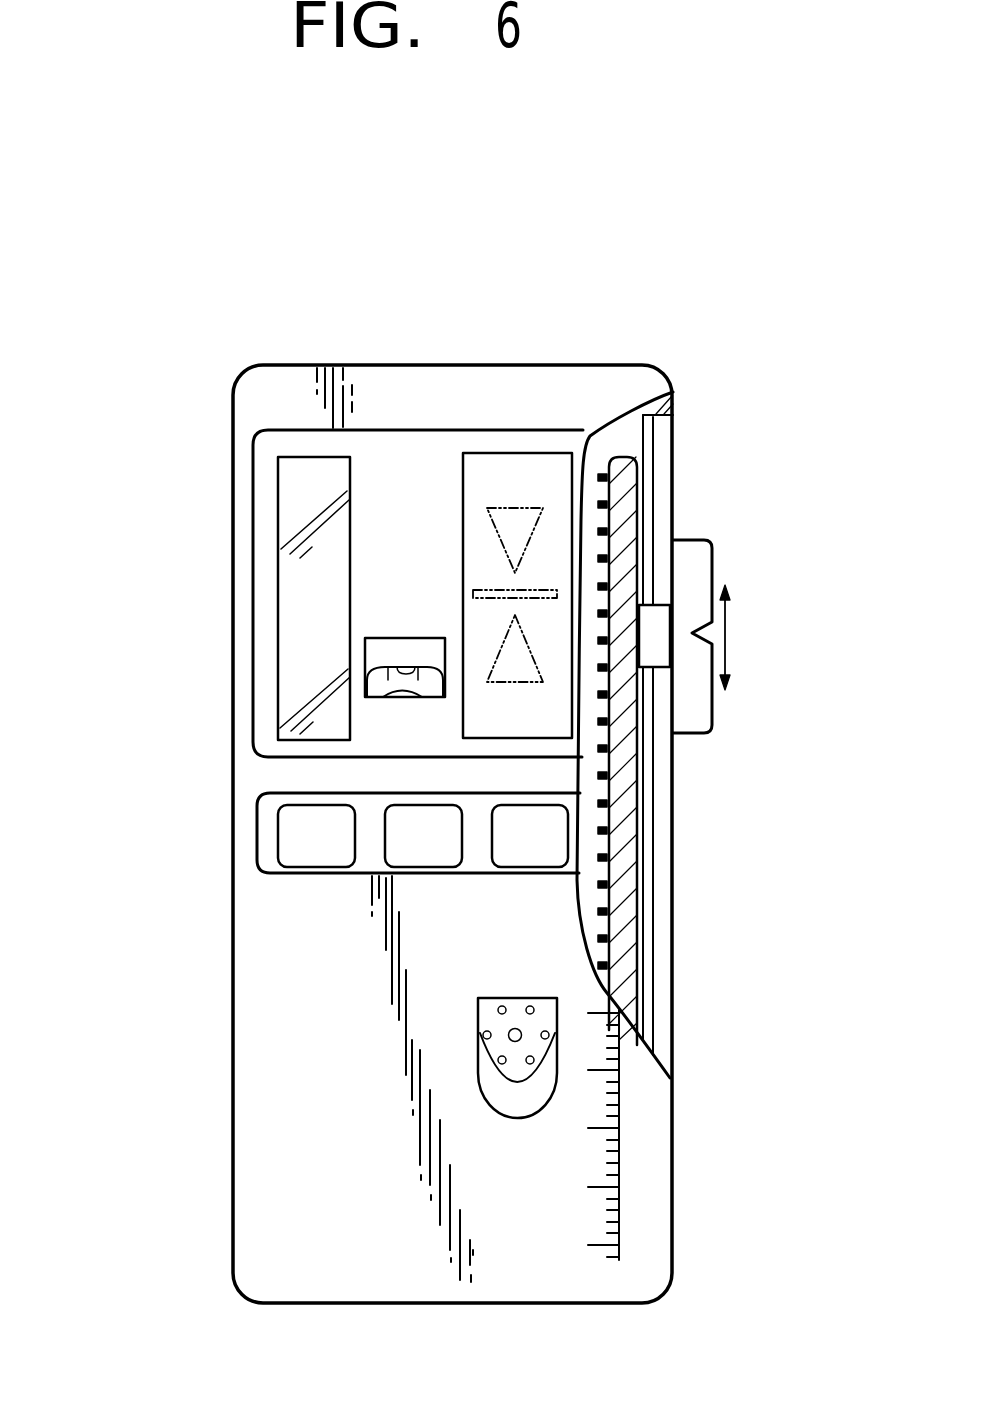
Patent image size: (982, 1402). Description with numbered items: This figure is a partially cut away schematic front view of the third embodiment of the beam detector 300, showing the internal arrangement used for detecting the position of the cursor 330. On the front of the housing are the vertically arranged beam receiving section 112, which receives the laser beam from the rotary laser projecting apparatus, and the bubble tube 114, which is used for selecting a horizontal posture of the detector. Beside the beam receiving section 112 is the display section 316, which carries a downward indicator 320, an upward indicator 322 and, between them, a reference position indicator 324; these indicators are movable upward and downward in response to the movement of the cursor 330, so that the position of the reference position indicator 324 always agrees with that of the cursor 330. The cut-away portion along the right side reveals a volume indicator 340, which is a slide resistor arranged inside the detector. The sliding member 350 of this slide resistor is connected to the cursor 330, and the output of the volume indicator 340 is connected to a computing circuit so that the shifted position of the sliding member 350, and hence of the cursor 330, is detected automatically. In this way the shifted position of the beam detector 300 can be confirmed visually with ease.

The beam detector 300 is at (393, 364).
The beam receiving section 112 is at (310, 590).
The bubble tube 114 is at (367, 673).
The display section 316 is at (507, 488).
The downward indicator 320 is at (535, 520).
The reference position indicator 324 is at (553, 595).
The upward indicator 322 is at (518, 660).
The volume indicator 340 is at (623, 840).
The sliding member 350 is at (657, 637).
The cursor 330 is at (703, 562).